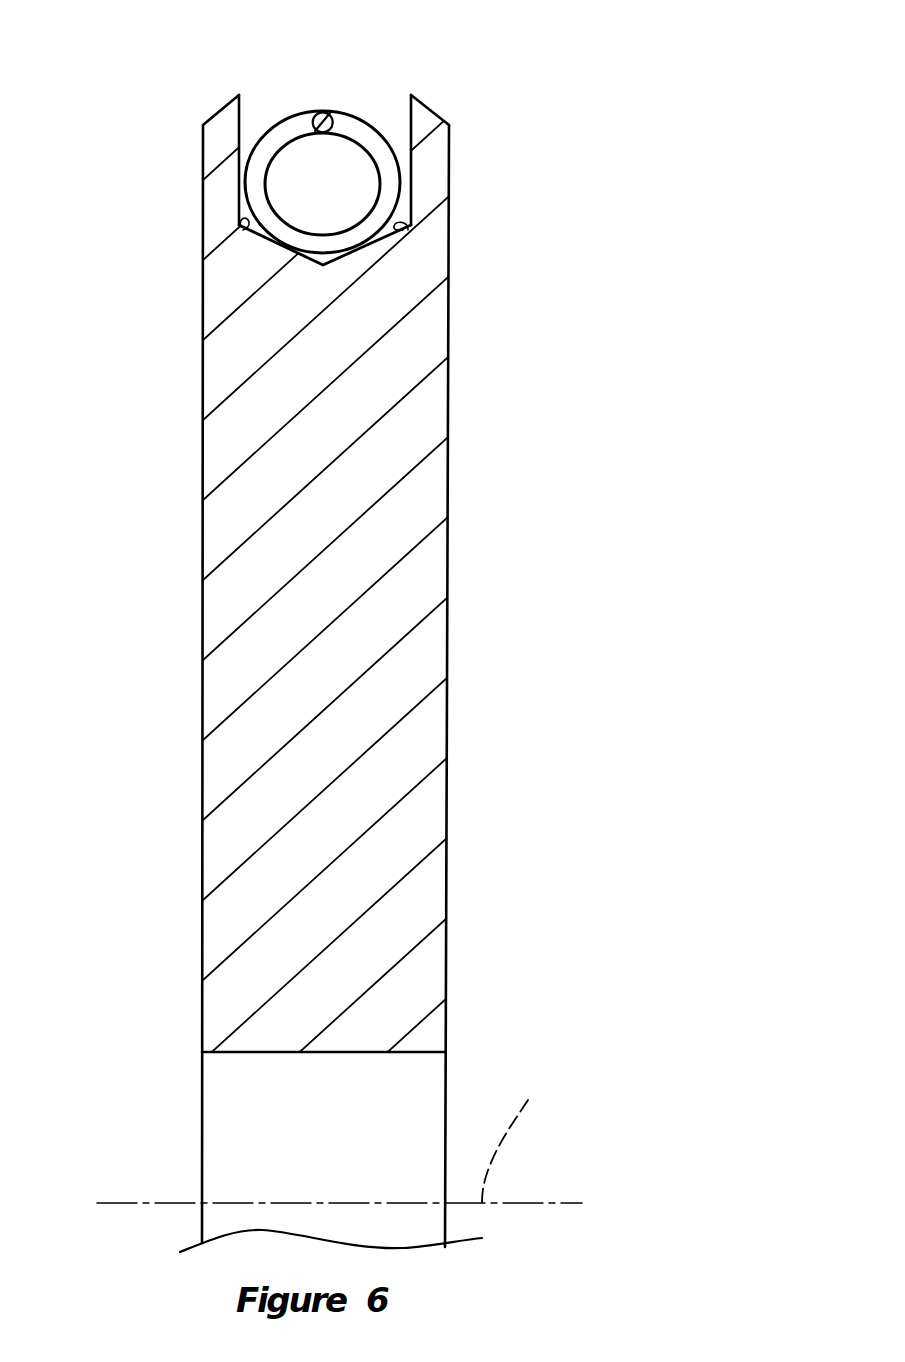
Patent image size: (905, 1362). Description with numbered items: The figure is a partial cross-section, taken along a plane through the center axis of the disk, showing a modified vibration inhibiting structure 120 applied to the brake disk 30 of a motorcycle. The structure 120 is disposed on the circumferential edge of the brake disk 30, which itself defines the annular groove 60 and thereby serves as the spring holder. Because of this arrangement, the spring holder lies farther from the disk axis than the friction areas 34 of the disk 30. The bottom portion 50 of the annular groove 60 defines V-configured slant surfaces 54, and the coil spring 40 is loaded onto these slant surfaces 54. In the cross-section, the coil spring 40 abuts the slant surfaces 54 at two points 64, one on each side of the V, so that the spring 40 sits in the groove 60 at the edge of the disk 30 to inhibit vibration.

The vibration inhibiting structure 120 is at (497, 109).
The brake disk 30 is at (450, 565).
The friction areas 34 is at (203, 461).
The coil spring 40 is at (363, 118).
The bottom portion 50 is at (355, 270).
The slant surfaces 54 is at (241, 227).
The annular groove 60 is at (240, 130).
The abutment points 64 is at (282, 244).